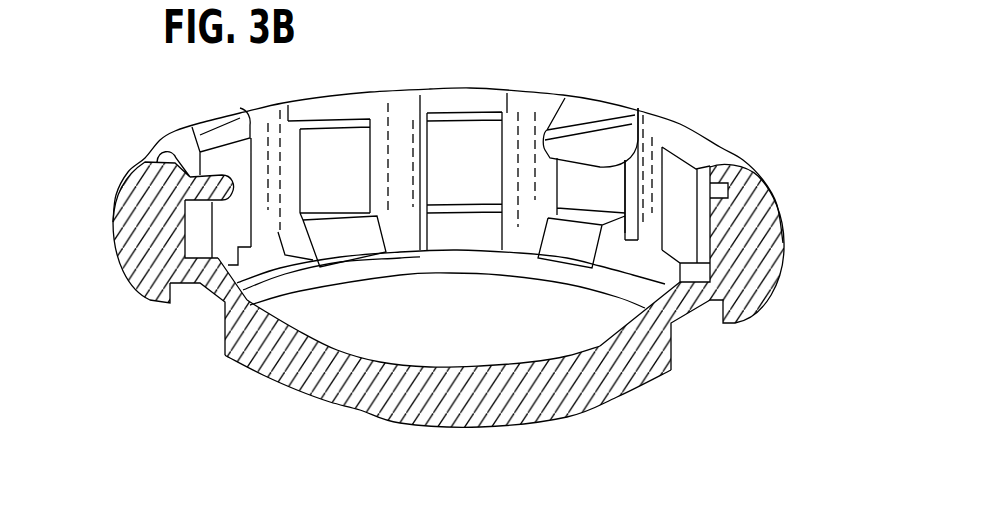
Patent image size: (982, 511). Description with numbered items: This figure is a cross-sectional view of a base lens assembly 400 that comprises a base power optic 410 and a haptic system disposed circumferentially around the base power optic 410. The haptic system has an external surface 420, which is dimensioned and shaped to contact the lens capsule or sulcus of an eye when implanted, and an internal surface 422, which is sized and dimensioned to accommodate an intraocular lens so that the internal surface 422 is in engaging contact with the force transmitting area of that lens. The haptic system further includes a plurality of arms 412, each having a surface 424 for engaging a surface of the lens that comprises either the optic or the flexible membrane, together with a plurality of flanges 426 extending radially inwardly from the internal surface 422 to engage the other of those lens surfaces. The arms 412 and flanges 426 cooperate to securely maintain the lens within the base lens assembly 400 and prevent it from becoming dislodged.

The base lens assembly 400 is at (110, 154).
The base power optic 410 is at (463, 337).
The arms 412 is at (213, 306).
The external surface 420 is at (803, 177).
The internal surface 422 is at (458, 138).
The surface 424 is at (338, 212).
The flanges 426 is at (197, 178).